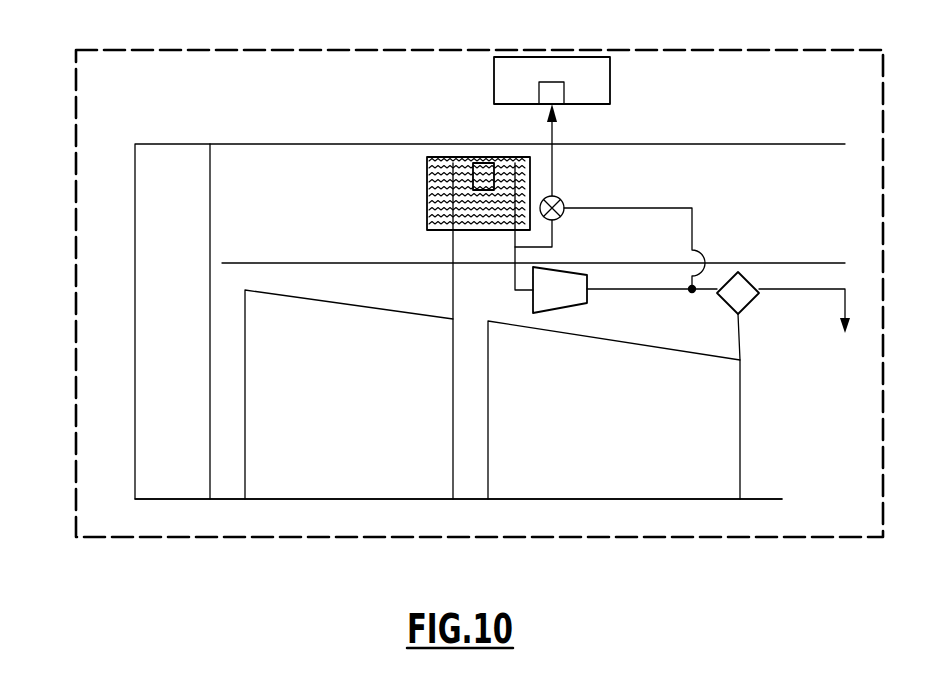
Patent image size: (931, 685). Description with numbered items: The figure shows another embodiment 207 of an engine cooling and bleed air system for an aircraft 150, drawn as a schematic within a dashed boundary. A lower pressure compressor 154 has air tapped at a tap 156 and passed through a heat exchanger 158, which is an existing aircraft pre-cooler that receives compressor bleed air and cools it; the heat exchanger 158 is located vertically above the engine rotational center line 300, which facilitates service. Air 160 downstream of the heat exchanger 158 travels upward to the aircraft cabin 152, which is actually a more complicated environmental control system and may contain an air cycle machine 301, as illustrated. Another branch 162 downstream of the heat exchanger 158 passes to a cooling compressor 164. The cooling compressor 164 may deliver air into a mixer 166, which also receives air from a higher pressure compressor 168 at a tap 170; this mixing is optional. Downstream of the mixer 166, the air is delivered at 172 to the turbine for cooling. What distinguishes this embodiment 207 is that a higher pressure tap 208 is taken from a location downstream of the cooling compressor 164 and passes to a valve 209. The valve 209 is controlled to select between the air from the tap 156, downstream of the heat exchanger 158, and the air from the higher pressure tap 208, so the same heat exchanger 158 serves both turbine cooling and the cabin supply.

The aircraft 150 is at (80, 283).
The aircraft cabin 152 is at (494, 78).
The lower pressure compressor 154 is at (318, 348).
The air tap 156 is at (451, 316).
The heat exchanger 158 is at (427, 178).
The air downstream of heat exchanger 160 is at (553, 160).
The branch 162 is at (516, 272).
The cooling compressor 164 is at (572, 283).
The mixer 166 is at (737, 281).
The higher pressure compressor 168 is at (640, 388).
The tap 170 is at (741, 333).
The delivery to turbine 172 is at (807, 288).
The embodiment 207 is at (775, 71).
The higher pressure tap 208 is at (689, 295).
The valve 209 is at (563, 200).
The engine rotational center line 300 is at (767, 498).
The air cycle machine 301 is at (564, 96).